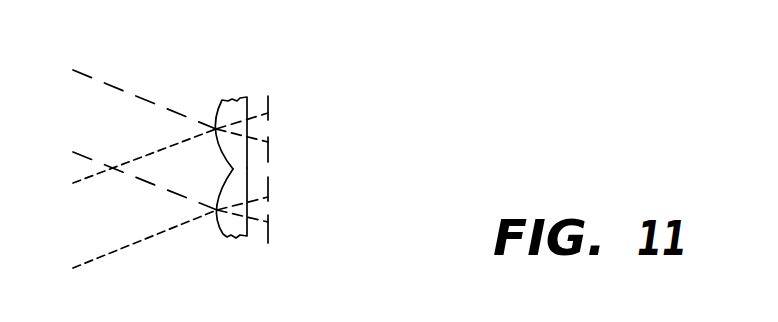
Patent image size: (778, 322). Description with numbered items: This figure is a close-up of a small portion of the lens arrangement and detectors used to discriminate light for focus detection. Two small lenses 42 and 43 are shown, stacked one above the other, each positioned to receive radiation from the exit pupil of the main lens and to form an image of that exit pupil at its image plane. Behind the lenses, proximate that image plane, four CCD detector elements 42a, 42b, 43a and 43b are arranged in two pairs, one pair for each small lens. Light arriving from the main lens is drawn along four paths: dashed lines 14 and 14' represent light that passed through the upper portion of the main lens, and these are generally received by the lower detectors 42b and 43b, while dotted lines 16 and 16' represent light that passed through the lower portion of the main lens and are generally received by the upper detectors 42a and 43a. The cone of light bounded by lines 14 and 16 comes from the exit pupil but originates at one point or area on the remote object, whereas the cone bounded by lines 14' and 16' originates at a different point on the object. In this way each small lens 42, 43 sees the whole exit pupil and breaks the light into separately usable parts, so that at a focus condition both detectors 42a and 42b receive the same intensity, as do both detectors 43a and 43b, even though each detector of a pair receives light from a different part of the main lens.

The light path 14 is at (161, 83).
The light path 14' is at (157, 159).
The light path 16 is at (155, 170).
The light path 16' is at (152, 249).
The lens 42 is at (219, 111).
The lens 43 is at (224, 237).
The CCD detector element 42a is at (268, 113).
The CCD detector element 42b is at (268, 142).
The CCD detector element 43a is at (268, 197).
The CCD detector element 43b is at (268, 222).